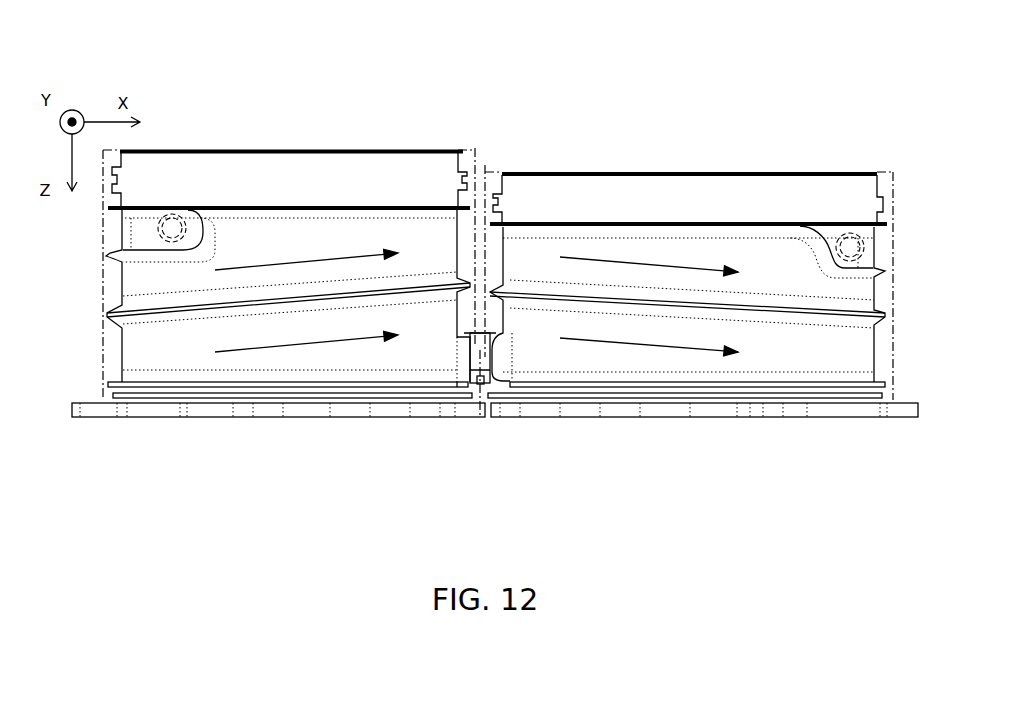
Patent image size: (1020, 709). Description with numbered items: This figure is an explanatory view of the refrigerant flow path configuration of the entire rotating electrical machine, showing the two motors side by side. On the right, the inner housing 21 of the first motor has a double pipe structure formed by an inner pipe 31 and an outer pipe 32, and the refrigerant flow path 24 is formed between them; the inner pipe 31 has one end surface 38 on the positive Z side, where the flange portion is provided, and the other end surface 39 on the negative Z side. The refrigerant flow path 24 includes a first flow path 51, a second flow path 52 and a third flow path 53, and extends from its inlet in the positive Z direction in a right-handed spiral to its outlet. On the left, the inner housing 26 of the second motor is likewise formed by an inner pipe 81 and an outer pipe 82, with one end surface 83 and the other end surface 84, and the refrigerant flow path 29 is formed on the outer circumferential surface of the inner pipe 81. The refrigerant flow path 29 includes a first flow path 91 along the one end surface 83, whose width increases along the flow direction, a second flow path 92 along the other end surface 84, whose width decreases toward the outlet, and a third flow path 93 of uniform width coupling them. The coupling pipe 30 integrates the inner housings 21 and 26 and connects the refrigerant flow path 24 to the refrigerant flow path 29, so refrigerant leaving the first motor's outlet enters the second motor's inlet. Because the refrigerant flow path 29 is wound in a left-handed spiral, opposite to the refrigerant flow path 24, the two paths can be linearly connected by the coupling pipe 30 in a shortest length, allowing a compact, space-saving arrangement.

The inner housing 21 is at (680, 97).
The refrigerant flow path 24 is at (765, 215).
The inner housing 26 is at (296, 93).
The refrigerant flow path 29 is at (271, 199).
The coupling pipe 30 is at (481, 380).
The inner pipe 31 is at (703, 171).
The outer pipe 32 is at (497, 167).
The one end surface 38 is at (826, 416).
The other end surface 39 is at (843, 170).
The first flow path 51 is at (583, 248).
The second flow path 52 is at (662, 365).
The third flow path 53 is at (866, 292).
The inner pipe 81 is at (323, 151).
The outer pipe 82 is at (468, 152).
The one end surface 83 is at (205, 415).
The other end surface 84 is at (187, 148).
The first flow path 91 is at (332, 363).
The second flow path 92 is at (365, 238).
The third flow path 93 is at (130, 287).